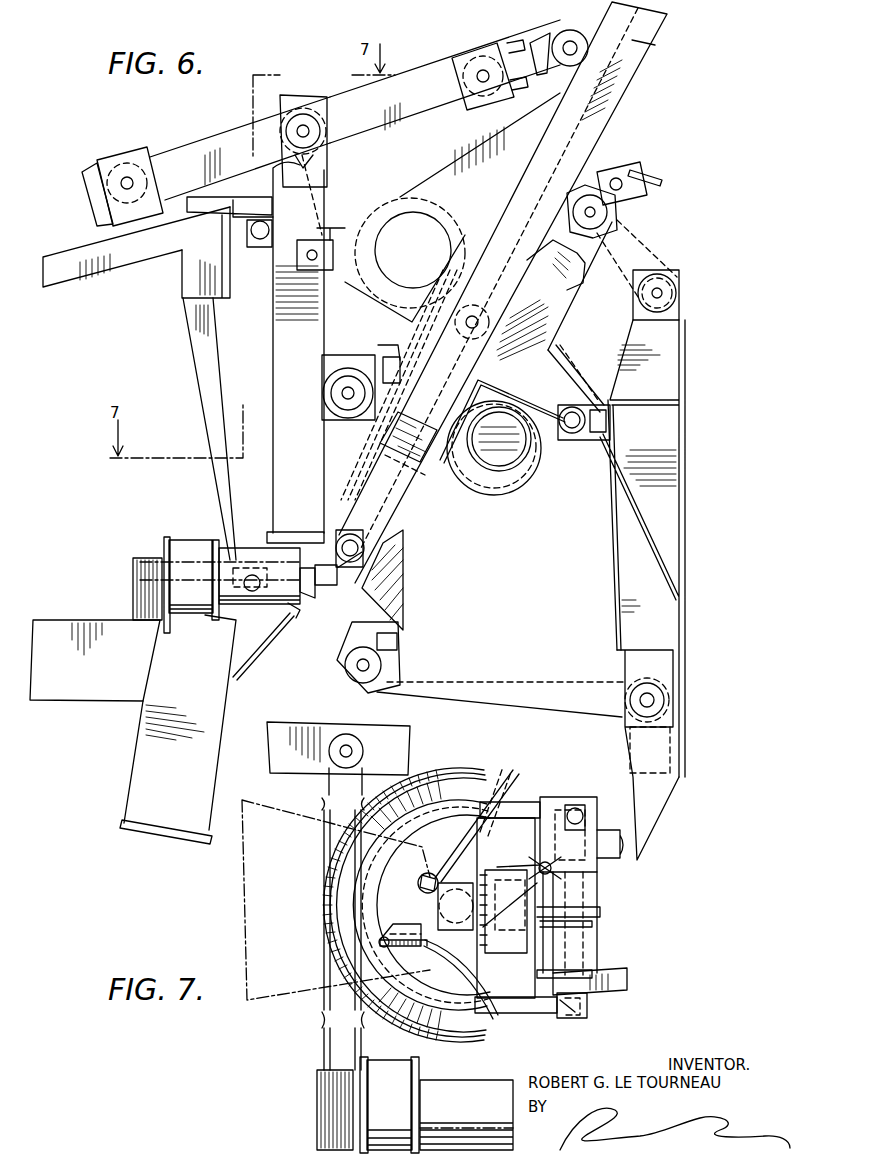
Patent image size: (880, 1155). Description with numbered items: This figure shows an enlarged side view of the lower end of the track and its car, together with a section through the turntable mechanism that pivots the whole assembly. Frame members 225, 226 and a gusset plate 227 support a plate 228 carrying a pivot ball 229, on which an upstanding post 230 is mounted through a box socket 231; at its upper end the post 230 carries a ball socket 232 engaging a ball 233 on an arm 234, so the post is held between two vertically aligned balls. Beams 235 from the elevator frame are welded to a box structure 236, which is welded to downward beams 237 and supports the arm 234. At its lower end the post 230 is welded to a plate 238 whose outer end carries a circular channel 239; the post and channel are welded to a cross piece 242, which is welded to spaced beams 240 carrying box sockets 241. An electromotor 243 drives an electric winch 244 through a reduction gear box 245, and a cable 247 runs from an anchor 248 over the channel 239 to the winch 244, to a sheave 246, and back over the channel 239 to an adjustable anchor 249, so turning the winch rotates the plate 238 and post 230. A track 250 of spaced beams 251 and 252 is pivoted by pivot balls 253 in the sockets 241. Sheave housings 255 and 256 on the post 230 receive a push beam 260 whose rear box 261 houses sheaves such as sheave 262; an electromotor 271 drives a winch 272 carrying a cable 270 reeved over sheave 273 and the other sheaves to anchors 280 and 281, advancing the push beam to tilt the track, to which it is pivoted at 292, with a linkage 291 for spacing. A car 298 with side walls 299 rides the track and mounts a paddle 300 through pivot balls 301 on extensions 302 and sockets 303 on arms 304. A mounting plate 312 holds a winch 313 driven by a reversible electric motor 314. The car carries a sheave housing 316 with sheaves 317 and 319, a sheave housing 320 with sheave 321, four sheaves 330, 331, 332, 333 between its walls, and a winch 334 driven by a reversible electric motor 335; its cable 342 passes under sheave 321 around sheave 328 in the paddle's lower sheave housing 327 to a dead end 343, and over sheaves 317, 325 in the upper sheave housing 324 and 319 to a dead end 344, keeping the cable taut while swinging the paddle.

In FIG. 6, the frame member 225 is at (92, 690).
In FIG. 6, the frame member 226 is at (182, 835).
In FIG. 6, the gusset plate 227 is at (268, 650).
In FIG. 6, the plate 228 is at (256, 607).
In FIG. 6, the pivot ball 229 is at (252, 565).
In FIG. 6, the upstanding post 230 is at (285, 350).
In FIG. 7, the upstanding post 230 is at (552, 940).
In FIG. 6, the box socket 231 is at (292, 610).
In FIG. 6, the ball socket 232 is at (272, 242).
In FIG. 6, the ball 233 is at (256, 248).
In FIG. 7, the ball 233 is at (445, 948).
In FIG. 6, the arm 234 is at (213, 203).
In FIG. 7, the arm 234 is at (418, 880).
In FIG. 6, the beam 235 is at (80, 268).
In FIG. 7, the beam 235 is at (255, 1005).
In FIG. 6, the box structure 236 is at (192, 272).
In FIG. 6, the beam 237 is at (192, 373).
In FIG. 6, the plate 238 is at (308, 592).
In FIG. 7, the plate 238 is at (455, 812).
In FIG. 6, the circular channel 239 is at (333, 577).
In FIG. 7, the circular channel 239 is at (492, 790).
In FIG. 6, the spaced beam 240 is at (328, 532).
In FIG. 7, the spaced beam 240 is at (532, 808).
In FIG. 6, the box socket 241 is at (385, 550).
In FIG. 7, the box socket 241 is at (582, 797).
In FIG. 6, the cross piece 242 is at (288, 533).
In FIG. 7, the cross piece 242 is at (507, 909).
In FIG. 6, the electromotor 243 is at (262, 582).
In FIG. 7, the electromotor 243 is at (468, 1090).
In FIG. 6, the electric winch 244 is at (135, 592).
In FIG. 7, the electric winch 244 is at (317, 1116).
In FIG. 6, the reduction gear box 245 is at (173, 540).
In FIG. 7, the reduction gear box 245 is at (388, 1075).
In FIG. 7, the sheave 246 is at (350, 737).
In FIG. 7, the cable 247 is at (322, 1040).
In FIG. 7, the anchor 248 is at (440, 874).
In FIG. 7, the adjustable anchor 249 is at (388, 925).
In FIG. 6, the track 250 is at (625, 122).
In FIG. 7, the spaced beam 251 is at (612, 860).
In FIG. 6, the spaced beam 252 is at (633, 68).
In FIG. 7, the spaced beam 252 is at (625, 983).
In FIG. 7, the pivot ball 253 is at (587, 817).
In FIG. 6, the sheave housing 255 is at (295, 98).
In FIG. 7, the sheave housing 255 is at (495, 945).
In FIG. 7, the sheave housing 256 is at (492, 868).
In FIG. 6, the push beam 260 is at (412, 78).
In FIG. 6, the box 261 is at (105, 168).
In FIG. 6, the sheave 262 is at (125, 162).
In FIG. 6, the cable 270 is at (203, 143).
In FIG. 6, the electromotor 271 is at (392, 352).
In FIG. 6, the winch 272 is at (365, 396).
In FIG. 6, the sheave 273 is at (322, 122).
In FIG. 6, the anchor 280 is at (308, 160).
In FIG. 6, the adjustable anchor 281 is at (337, 228).
In FIG. 6, the linkage 291 is at (538, 48).
In FIG. 6, the pivotal connection 292 is at (580, 50).
In FIG. 6, the car 298 is at (558, 354).
In FIG. 6, the side wall 299 is at (550, 308).
In FIG. 6, the paddle 300 is at (685, 452).
In FIG. 6, the pivot ball 301 is at (560, 402).
In FIG. 6, the extension 302 is at (556, 368).
In FIG. 6, the socket 303 is at (571, 440).
In FIG. 6, the arm 304 is at (597, 405).
In FIG. 6, the mounting plate 312 is at (418, 187).
In FIG. 6, the winch 313 is at (372, 203).
In FIG. 6, the reversible electric motor 314 is at (432, 238).
In FIG. 6, the sheave housing 316 is at (622, 215).
In FIG. 6, the sheave 317 is at (608, 172).
In FIG. 6, the sheave 319 is at (600, 243).
In FIG. 6, the sheave housing 320 is at (340, 670).
In FIG. 6, the sheave 321 is at (384, 667).
In FIG. 6, the upper sheave housing 324 is at (692, 296).
In FIG. 6, the sheave 325 is at (678, 275).
In FIG. 6, the lower sheave housing 327 is at (675, 707).
In FIG. 6, the sheave 328 is at (625, 682).
In FIG. 6, the sheave 330 is at (418, 412).
In FIG. 6, the sheave 331 is at (405, 430).
In FIG. 6, the sheave 332 is at (405, 447).
In FIG. 6, the sheave 333 is at (432, 472).
In FIG. 6, the winch 334 is at (522, 482).
In FIG. 6, the reversible electric motor 335 is at (500, 455).
In FIG. 6, the cable 342 is at (648, 250).
In FIG. 6, the dead end 343 is at (395, 642).
In FIG. 6, the dead end 344 is at (645, 172).